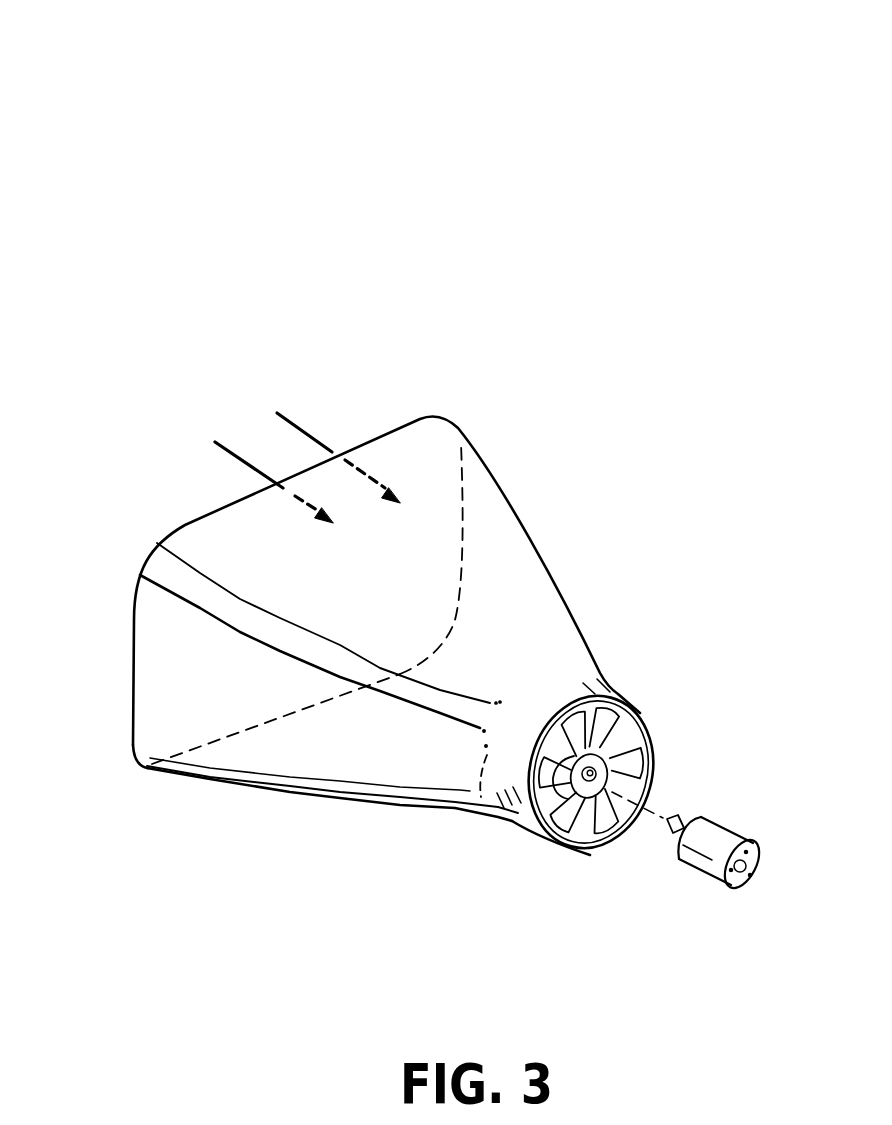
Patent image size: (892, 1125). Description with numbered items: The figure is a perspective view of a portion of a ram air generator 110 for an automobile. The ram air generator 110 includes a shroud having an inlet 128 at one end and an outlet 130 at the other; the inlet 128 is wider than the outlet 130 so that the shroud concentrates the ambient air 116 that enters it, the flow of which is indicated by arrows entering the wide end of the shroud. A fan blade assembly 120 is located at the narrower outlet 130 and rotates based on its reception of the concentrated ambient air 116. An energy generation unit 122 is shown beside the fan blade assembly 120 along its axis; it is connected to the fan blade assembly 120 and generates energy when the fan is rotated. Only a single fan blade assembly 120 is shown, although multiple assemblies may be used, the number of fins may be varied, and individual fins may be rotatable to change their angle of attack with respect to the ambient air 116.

The ram air generator 110 is at (418, 128).
The ambient air 116 is at (237, 458).
The fan blade assembly 120 is at (648, 722).
The energy generation unit 122 is at (720, 827).
The inlet 128 is at (146, 767).
The outlet 130 is at (510, 818).